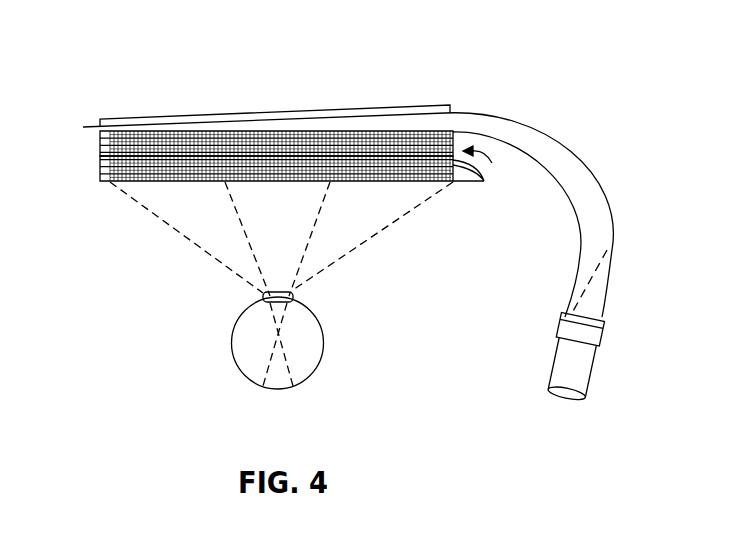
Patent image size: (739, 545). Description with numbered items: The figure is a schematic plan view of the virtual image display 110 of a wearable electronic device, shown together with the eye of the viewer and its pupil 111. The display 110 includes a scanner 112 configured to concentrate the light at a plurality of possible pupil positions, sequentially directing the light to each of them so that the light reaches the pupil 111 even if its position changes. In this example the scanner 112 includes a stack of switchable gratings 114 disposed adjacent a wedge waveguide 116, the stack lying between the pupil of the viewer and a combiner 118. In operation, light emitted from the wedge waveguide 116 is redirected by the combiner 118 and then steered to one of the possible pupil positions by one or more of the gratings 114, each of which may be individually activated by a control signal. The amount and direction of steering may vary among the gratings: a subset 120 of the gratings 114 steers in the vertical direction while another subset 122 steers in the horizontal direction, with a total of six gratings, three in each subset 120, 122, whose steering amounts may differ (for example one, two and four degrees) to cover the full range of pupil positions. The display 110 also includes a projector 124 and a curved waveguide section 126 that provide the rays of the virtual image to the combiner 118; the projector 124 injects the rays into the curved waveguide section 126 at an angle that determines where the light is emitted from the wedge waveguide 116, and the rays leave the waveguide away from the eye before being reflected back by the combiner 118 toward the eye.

The display 110 is at (351, 228).
The pupil 111 is at (292, 292).
The scanner 112 is at (496, 164).
The switchable gratings 114 is at (478, 182).
The wedge waveguide 116 is at (83, 127).
The combiner 118 is at (173, 117).
The subset of gratings 120 is at (93, 131).
The subset of gratings 122 is at (93, 156).
The projector 124 is at (598, 354).
The curved waveguide section 126 is at (557, 152).